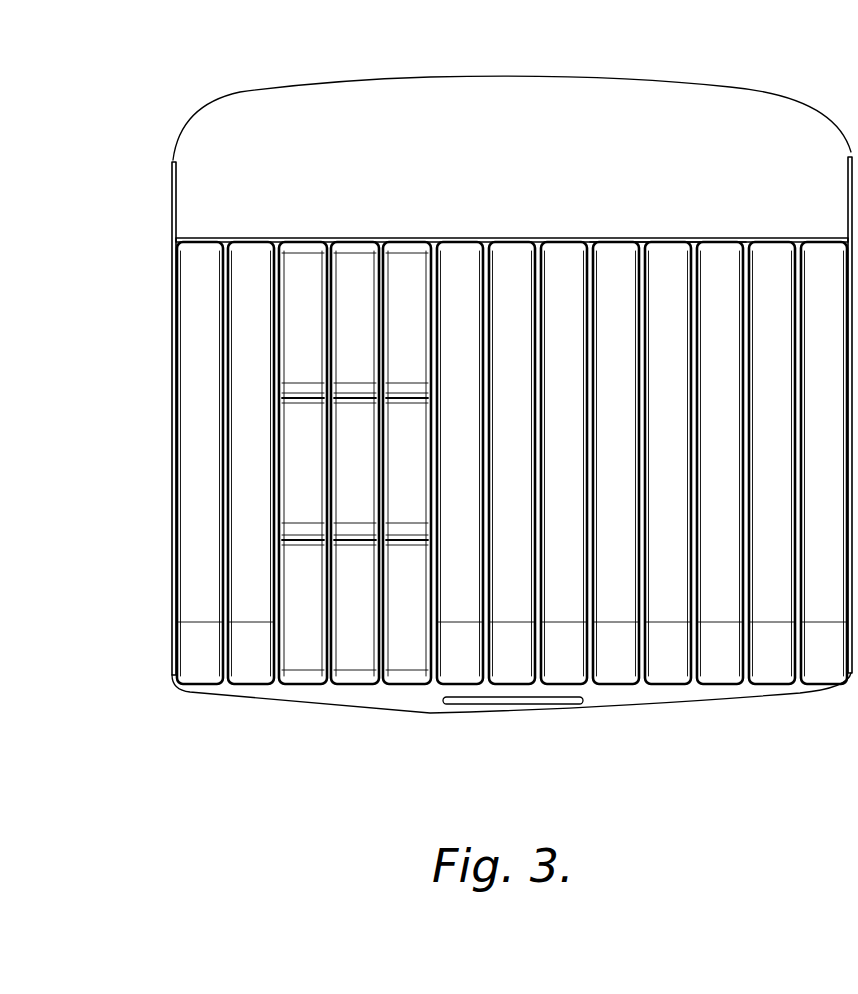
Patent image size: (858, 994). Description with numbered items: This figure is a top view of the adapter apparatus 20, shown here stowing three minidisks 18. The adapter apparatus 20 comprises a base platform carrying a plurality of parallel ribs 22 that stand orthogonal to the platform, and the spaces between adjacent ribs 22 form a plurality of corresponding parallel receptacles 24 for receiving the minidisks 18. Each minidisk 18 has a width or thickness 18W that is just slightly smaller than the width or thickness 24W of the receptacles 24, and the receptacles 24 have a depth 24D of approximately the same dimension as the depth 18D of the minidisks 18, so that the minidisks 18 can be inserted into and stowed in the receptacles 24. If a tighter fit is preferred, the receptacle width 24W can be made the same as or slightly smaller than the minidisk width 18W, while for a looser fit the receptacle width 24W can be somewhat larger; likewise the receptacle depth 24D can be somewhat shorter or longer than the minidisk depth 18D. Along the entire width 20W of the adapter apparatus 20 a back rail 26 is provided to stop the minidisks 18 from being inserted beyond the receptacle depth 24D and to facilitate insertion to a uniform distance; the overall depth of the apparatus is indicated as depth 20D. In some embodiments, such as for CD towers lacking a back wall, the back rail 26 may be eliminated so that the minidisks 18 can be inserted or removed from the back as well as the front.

The minidisk 18 is at (413, 247).
The adapter apparatus 20 is at (703, 100).
The parallel ribs 22 is at (698, 258).
The parallel receptacles 24 is at (784, 362).
The back rail 26 is at (498, 236).
The depth of the adapter apparatus 20D is at (50, 77).
The receptacle depth 24D is at (105, 240).
The minidisk depth 18D is at (252, 245).
The minidisk width or thickness 18W is at (283, 690).
The receptacle width or thickness 24W is at (597, 687).
The width of the adapter apparatus 20W is at (172, 693).